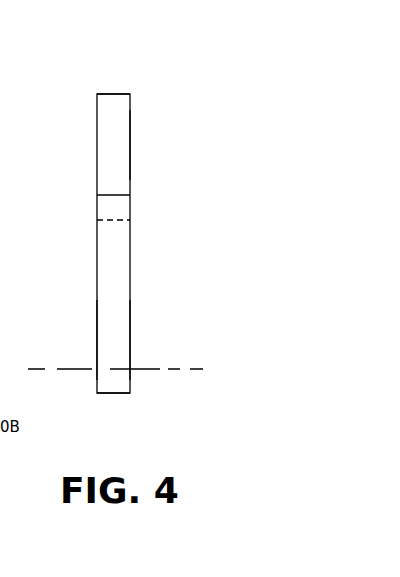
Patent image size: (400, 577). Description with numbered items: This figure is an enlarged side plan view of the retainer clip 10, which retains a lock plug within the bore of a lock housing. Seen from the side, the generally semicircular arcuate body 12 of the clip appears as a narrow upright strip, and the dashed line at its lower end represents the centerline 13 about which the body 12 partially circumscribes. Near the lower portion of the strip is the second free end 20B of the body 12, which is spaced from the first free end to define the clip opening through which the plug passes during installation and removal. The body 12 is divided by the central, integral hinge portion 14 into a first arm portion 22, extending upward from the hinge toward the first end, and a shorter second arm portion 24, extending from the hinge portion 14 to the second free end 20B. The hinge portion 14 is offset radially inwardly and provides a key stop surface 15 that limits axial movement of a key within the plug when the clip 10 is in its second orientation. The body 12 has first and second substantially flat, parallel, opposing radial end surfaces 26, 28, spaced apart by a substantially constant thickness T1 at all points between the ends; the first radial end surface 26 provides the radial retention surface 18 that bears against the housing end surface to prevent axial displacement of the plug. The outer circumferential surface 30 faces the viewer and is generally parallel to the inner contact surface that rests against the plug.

The retainer clip 10 is at (70, 52).
The arcuate body 12 is at (82, 122).
The centerline 13 is at (202, 369).
The hinge portion 14 is at (135, 188).
The key stop surface 15 is at (132, 227).
The radial retention surface 18 is at (130, 143).
The first arm portion 22 is at (118, 117).
The second arm portion 24 is at (118, 303).
The first radial end surface 26 is at (130, 341).
The second radial end surface 28 is at (97, 329).
The outer circumferential surface 30 is at (123, 277).
The thickness T1 is at (53, 243).
The second free end 20B is at (110, 382).